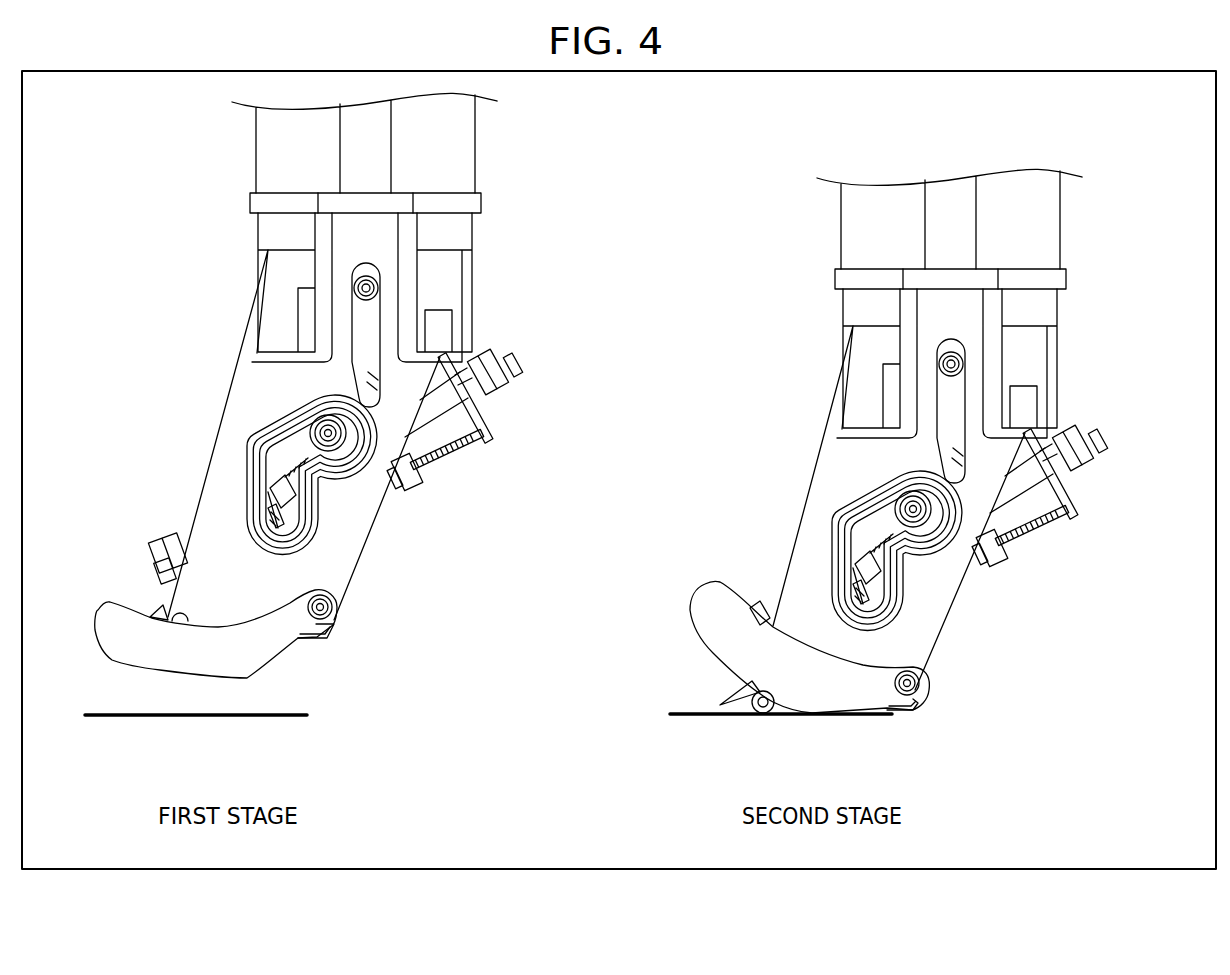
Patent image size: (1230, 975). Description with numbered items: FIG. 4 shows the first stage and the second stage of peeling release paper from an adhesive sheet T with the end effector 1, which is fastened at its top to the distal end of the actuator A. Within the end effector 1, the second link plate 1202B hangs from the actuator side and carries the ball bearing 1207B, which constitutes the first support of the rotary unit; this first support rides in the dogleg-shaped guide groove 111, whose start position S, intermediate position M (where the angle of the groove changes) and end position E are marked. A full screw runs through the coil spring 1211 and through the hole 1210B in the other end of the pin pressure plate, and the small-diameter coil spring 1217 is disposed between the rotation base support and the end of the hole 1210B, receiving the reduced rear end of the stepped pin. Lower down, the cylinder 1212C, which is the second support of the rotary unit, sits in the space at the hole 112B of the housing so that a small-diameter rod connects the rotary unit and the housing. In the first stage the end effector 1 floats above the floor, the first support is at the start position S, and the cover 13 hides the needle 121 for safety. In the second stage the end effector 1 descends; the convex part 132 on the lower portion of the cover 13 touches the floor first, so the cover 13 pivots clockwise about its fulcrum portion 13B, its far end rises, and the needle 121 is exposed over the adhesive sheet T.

The actuator A is at (455, 137).
The end effector 1 is at (492, 233).
The second link plate 1202B is at (367, 310).
The ball bearing 1207B is at (326, 418).
The guide groove 111 is at (282, 427).
The intermediate position M is at (280, 460).
The coil spring 1211 is at (288, 520).
The end position E is at (268, 513).
The hole 1210B is at (463, 398).
The small-diameter coil spring 1217 is at (452, 460).
The start position S is at (350, 440).
The cover 13 is at (108, 630).
The fulcrum portion 13B is at (337, 620).
The needle 121 is at (152, 614).
The convex part 132 is at (243, 663).
The hole 112B is at (763, 718).
The cylinder 1212C is at (780, 736).
The adhesive sheet T is at (93, 717).